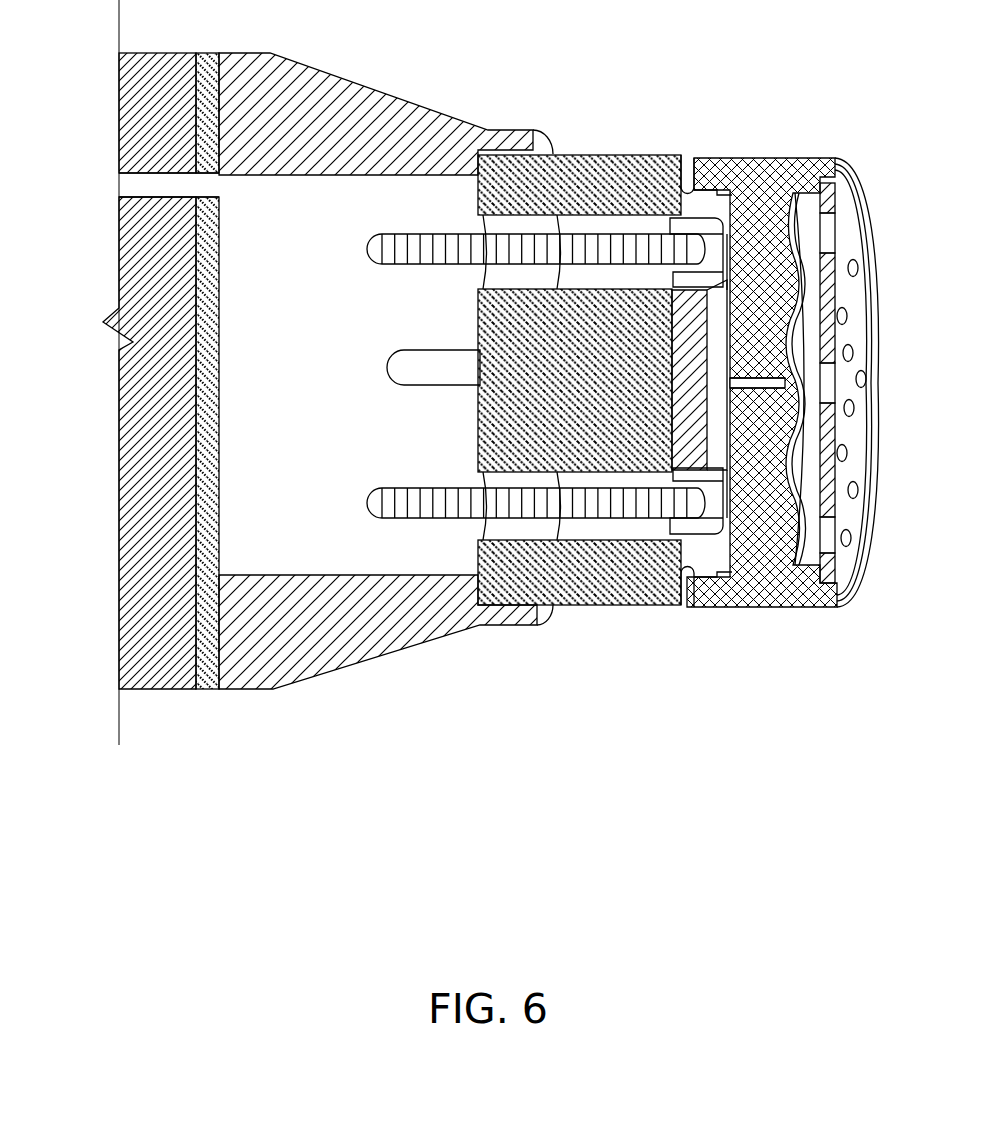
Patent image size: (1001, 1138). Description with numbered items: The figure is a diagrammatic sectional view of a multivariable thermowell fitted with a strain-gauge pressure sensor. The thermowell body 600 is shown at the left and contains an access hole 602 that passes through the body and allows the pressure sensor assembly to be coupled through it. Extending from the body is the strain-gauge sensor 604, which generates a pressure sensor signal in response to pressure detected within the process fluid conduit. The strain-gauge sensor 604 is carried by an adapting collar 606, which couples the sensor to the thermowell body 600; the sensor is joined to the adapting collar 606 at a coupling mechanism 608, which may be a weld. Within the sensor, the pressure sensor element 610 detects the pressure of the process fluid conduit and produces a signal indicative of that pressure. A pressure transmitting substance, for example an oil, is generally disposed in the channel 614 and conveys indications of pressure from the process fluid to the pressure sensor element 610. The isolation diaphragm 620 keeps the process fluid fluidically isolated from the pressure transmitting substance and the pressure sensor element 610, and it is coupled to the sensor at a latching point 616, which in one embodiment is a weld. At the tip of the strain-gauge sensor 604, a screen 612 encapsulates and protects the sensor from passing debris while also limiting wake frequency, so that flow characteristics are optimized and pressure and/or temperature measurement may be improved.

The thermowell body 600 is at (118, 475).
The access hole 602 is at (118, 187).
The strain-gauge sensor 604 is at (621, 663).
The adapting collar 606 is at (357, 84).
The coupling mechanism 608 is at (566, 129).
The pressure sensor element 610 is at (728, 250).
The screen 612 is at (847, 218).
The channel 614 is at (748, 382).
The latching point 616 is at (685, 165).
The isolation diaphragm 620 is at (820, 523).